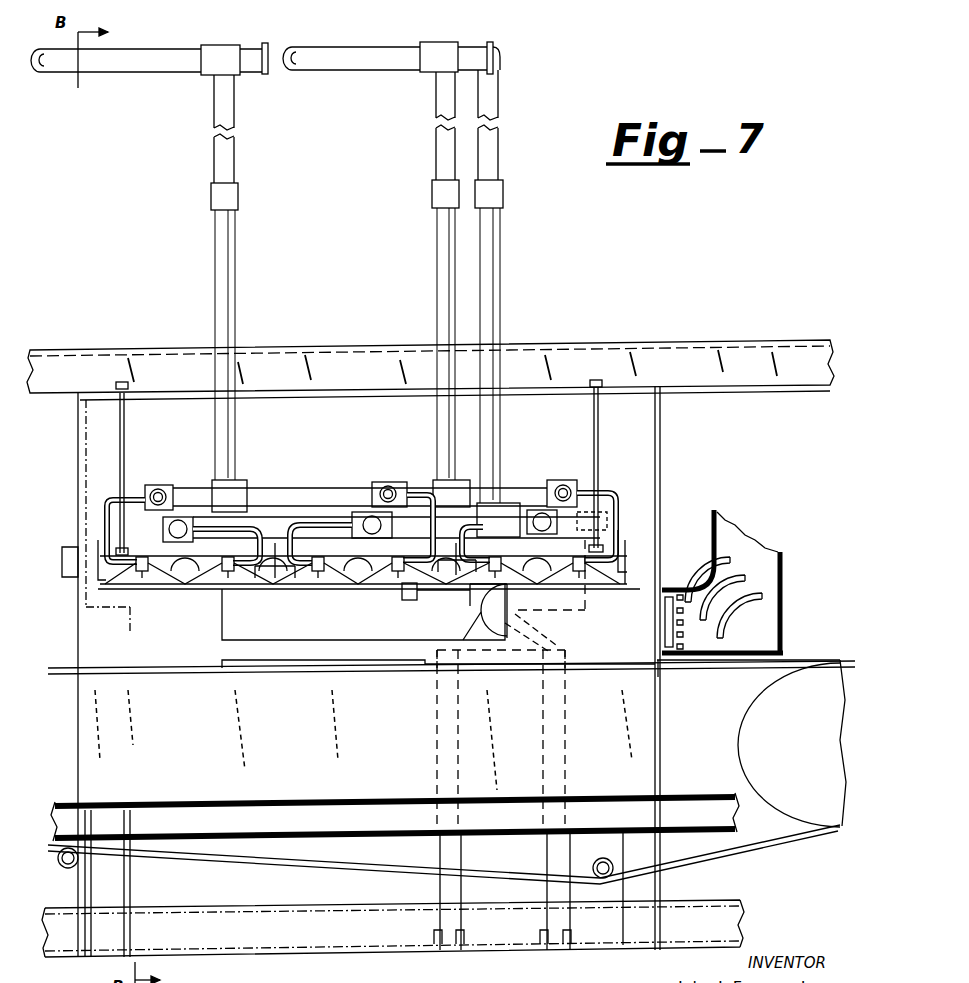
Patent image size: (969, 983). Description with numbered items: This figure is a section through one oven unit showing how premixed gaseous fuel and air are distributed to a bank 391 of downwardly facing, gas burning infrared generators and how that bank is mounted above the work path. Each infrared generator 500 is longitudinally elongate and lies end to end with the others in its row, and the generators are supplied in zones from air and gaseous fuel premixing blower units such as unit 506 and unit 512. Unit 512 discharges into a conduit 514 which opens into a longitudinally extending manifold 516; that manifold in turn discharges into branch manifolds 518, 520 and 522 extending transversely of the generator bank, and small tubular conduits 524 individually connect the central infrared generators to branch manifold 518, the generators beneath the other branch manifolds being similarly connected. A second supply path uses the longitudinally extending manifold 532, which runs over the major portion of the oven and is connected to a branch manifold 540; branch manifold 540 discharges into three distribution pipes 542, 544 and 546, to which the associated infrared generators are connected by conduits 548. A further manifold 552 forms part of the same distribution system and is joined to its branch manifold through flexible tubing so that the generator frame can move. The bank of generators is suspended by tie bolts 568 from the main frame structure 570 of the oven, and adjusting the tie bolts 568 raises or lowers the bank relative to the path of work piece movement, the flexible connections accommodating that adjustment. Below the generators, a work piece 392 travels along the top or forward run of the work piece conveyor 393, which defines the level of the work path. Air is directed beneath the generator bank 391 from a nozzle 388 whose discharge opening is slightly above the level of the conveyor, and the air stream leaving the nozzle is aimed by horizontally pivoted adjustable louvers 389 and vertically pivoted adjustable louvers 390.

The manifold 552 is at (197, 55).
The longitudinally extending manifold 532 is at (328, 55).
The conduit 514 is at (503, 256).
The main frame structure 570 is at (585, 349).
The tie bolts 568 is at (120, 418).
The distribution pipe 542 is at (156, 487).
The distribution pipe 544 is at (390, 482).
The distribution pipe 546 is at (565, 479).
The branch manifold 518 is at (164, 529).
The branch manifold 520 is at (360, 514).
The branch manifold 522 is at (543, 510).
The small tubular conduits 524 is at (248, 520).
The longitudinally extending manifold 516 is at (283, 519).
The branch manifold 540 is at (423, 483).
The conduits 548 is at (109, 499).
The infrared generator 500 is at (173, 583).
The bank of infrared generators 391 is at (320, 590).
The air and gaseous fuel premixing blower unit 506 is at (484, 596).
The air and gaseous fuel premixing blower unit 512 is at (548, 609).
The work piece 392 is at (284, 668).
The work piece conveyor 393 is at (341, 673).
The nozzle 388 is at (677, 589).
The horizontally pivoted adjustable louvers 389 is at (681, 660).
The vertically pivoted adjustable louvers 390 is at (665, 628).